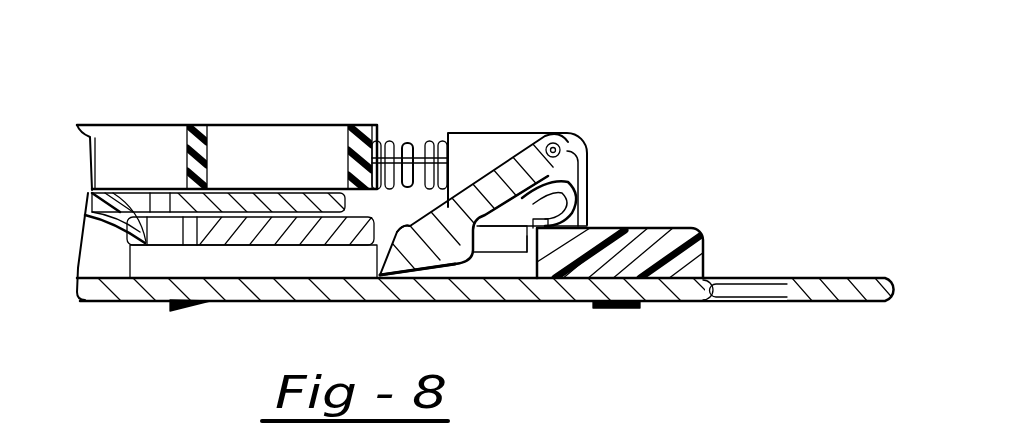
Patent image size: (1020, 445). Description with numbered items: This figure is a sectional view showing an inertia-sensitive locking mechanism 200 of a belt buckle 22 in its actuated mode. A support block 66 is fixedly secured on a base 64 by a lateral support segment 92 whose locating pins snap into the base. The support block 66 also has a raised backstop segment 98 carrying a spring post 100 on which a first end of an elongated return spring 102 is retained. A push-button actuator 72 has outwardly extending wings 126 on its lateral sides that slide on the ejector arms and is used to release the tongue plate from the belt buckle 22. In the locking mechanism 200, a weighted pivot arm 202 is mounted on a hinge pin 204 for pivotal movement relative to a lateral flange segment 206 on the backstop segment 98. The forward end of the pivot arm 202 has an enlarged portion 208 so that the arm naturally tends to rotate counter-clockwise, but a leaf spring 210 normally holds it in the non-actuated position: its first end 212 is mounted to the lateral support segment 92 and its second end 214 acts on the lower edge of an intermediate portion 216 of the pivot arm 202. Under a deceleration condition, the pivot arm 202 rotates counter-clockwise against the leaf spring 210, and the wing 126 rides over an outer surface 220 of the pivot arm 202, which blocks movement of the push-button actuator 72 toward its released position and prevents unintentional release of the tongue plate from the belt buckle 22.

The belt buckle 22 is at (308, 111).
The base 64 is at (837, 278).
The support block 66 is at (723, 243).
The push-button actuator 72 is at (240, 150).
The lateral support segment 92 is at (663, 229).
The backstop segment 98 is at (542, 143).
The spring post 100 is at (398, 152).
The return spring 102 is at (410, 148).
The wing 126 is at (273, 236).
The inertia-sensitive locking mechanism 200 is at (603, 186).
The weighted pivot arm 202 is at (452, 265).
The hinge pin 204 is at (580, 142).
The lateral flange segment 206 is at (468, 153).
The enlarged portion 208 is at (440, 263).
The leaf spring 210 is at (588, 163).
The first end 212 is at (572, 244).
The second end 214 is at (507, 253).
The intermediate portion 216 is at (498, 177).
The outer surface 220 is at (382, 276).